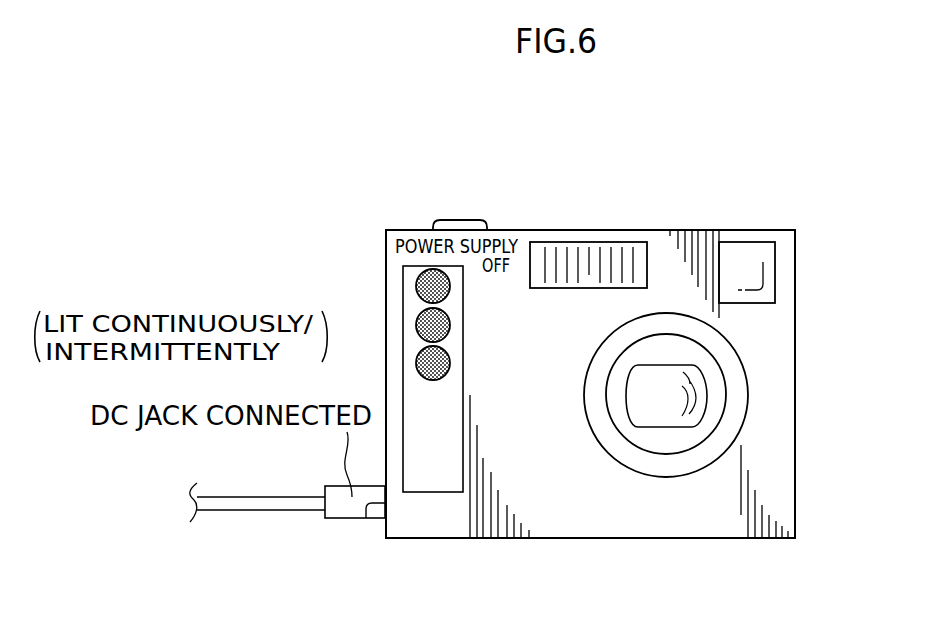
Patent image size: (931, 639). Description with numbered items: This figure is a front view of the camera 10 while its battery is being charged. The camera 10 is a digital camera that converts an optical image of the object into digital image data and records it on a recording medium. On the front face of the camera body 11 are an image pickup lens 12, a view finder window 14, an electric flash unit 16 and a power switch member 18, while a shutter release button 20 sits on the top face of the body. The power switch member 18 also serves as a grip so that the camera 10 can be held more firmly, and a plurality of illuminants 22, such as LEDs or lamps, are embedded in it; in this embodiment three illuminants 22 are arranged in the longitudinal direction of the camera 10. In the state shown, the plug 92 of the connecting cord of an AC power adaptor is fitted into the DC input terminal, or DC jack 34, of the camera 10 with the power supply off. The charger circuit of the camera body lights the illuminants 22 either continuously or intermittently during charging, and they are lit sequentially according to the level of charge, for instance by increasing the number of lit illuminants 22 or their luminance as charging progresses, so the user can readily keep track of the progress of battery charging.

The camera 10 is at (573, 218).
The camera body 11 is at (760, 500).
The image pickup lens 12 is at (665, 413).
The view finder window 14 is at (744, 258).
The electric flash unit 16 is at (603, 262).
The power switch member 18 is at (428, 482).
The shutter release button 20 is at (458, 222).
The illuminants 22 is at (416, 363).
The DC input terminal (DC jack) 34 is at (366, 518).
The plug 92 is at (340, 512).